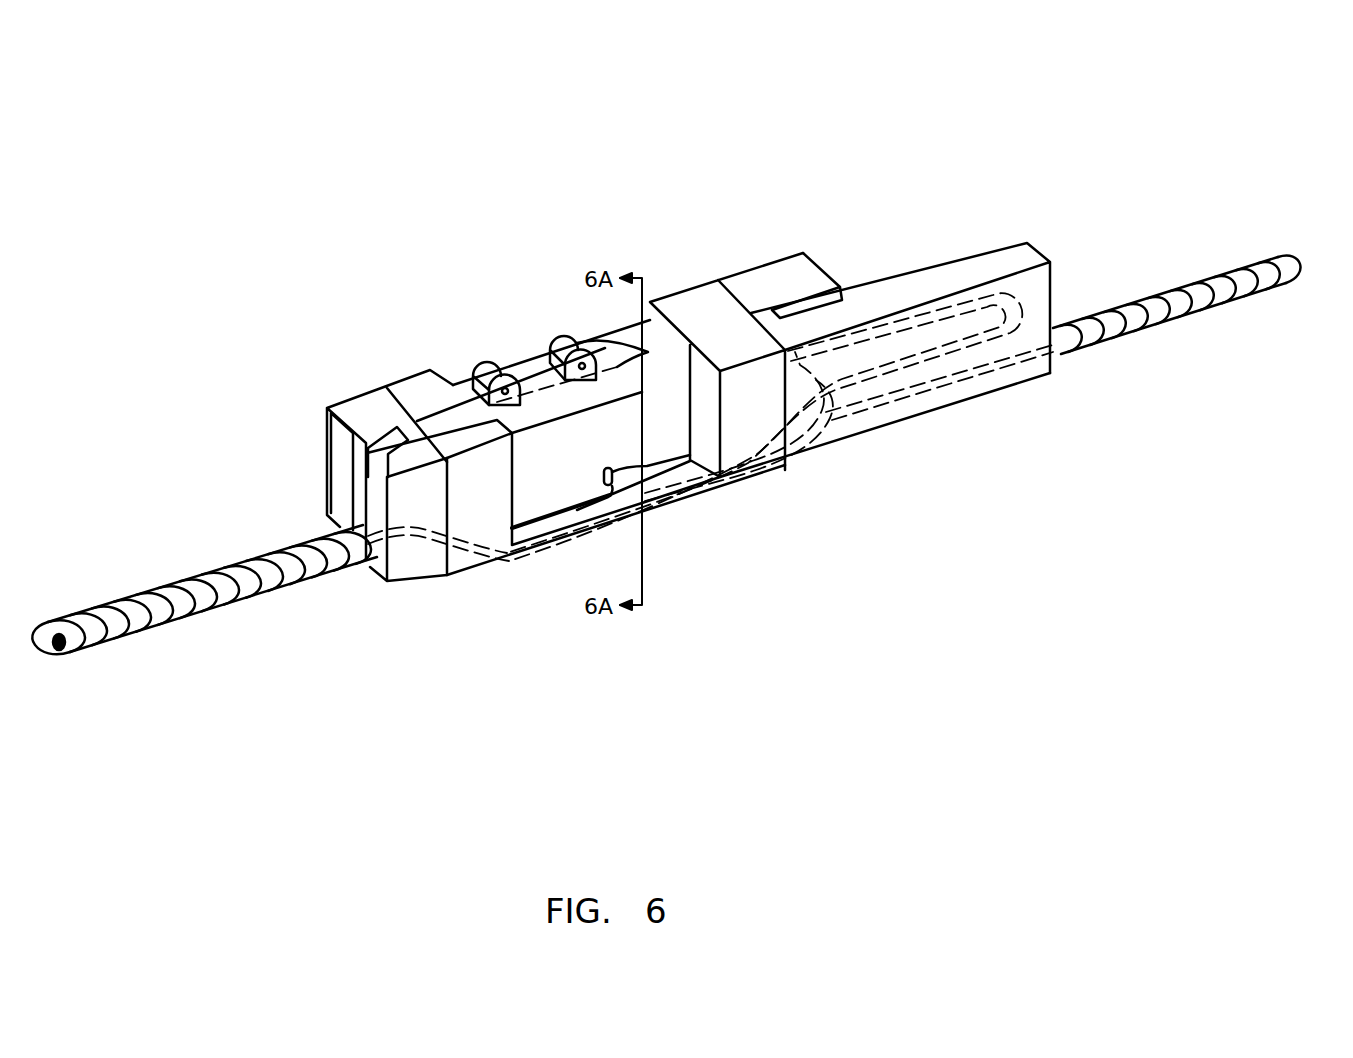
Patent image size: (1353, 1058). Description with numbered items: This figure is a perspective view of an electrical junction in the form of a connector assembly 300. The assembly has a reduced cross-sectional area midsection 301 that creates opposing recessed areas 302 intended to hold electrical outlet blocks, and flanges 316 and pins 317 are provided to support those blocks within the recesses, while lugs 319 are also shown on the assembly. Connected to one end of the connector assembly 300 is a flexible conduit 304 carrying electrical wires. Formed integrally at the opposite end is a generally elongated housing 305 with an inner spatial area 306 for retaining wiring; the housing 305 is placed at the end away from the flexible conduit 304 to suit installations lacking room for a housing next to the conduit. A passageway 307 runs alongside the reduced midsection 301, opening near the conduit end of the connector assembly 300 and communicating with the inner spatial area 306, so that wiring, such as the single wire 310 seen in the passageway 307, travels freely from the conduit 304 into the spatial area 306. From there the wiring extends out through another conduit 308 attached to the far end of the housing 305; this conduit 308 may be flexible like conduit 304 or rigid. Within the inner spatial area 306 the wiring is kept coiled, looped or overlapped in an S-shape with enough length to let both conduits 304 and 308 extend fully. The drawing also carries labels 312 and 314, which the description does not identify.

The connector assembly 300 is at (363, 393).
The reduced cross-sectional area midsection 301 is at (538, 370).
The opposing recessed areas 302 is at (500, 360).
The flexible conduit 304 is at (210, 600).
The elongated housing 305 is at (932, 268).
The inner spatial area 306 is at (930, 343).
The passageway 307 is at (469, 570).
The conduit 308 is at (1178, 312).
The wire 310 is at (392, 540).
The tab 312 is at (900, 105).
The cable opening 314 is at (340, 476).
The flanges 316 is at (579, 505).
The pins 317 is at (643, 523).
The lugs 319 is at (584, 337).